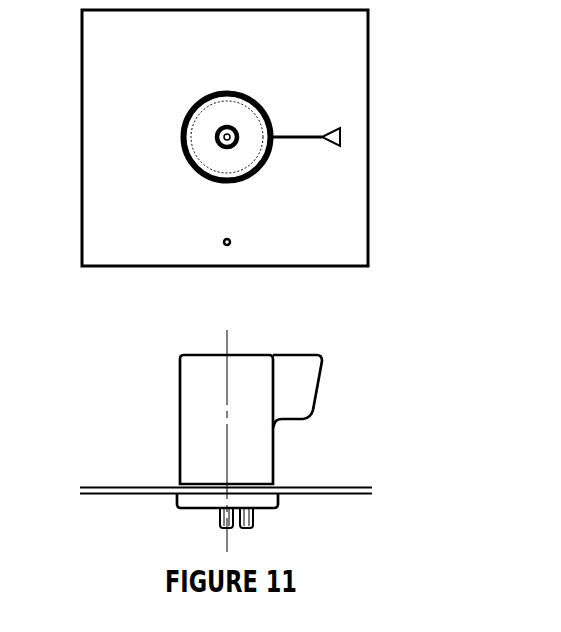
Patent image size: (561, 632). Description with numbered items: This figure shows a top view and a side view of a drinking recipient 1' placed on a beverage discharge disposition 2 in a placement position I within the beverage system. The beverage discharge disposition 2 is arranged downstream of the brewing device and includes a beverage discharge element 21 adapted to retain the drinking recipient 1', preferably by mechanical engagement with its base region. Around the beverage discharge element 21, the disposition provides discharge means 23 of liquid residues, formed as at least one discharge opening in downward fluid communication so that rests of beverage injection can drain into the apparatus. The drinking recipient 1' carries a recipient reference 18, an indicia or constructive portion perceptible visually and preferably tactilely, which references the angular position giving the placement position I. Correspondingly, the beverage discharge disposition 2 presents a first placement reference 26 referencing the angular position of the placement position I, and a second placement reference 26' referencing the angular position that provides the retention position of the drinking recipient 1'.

The placement position I is at (444, 176).
The beverage discharge disposition 2 is at (224, 252).
The drinking recipient 1' is at (209, 297).
The recipient reference 18 is at (304, 263).
The first placement reference 26 is at (328, 152).
The second placement reference 26' is at (199, 246).
The beverage discharge element 21 is at (215, 523).
The discharge means 23 is at (255, 523).